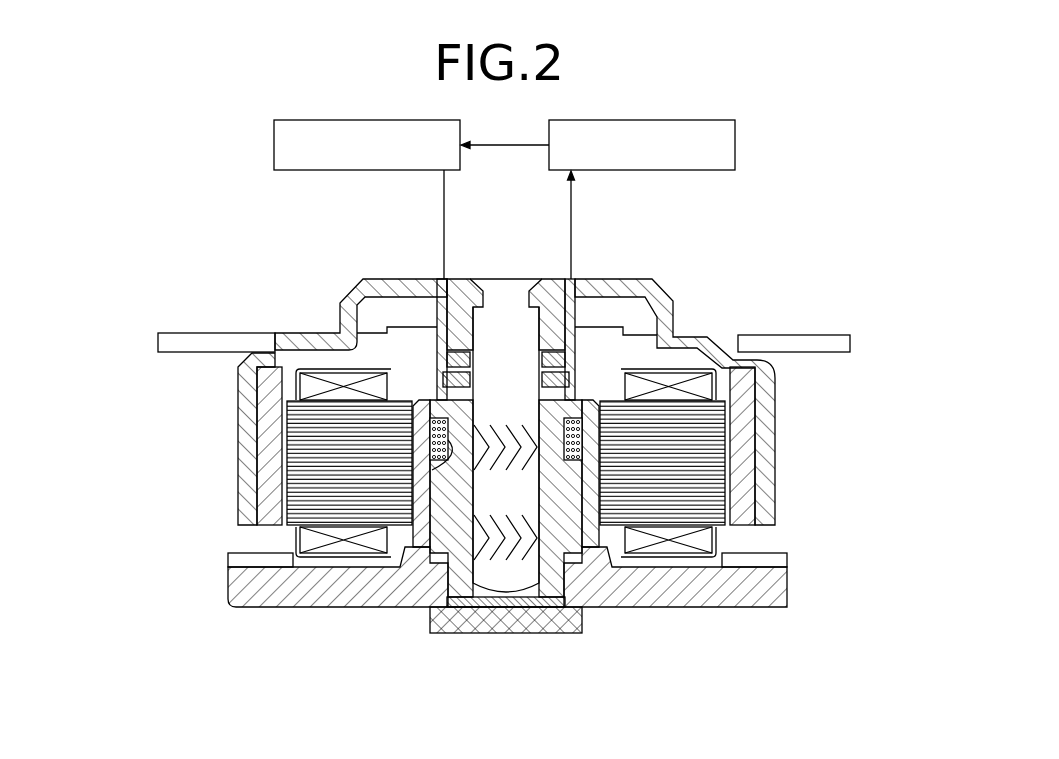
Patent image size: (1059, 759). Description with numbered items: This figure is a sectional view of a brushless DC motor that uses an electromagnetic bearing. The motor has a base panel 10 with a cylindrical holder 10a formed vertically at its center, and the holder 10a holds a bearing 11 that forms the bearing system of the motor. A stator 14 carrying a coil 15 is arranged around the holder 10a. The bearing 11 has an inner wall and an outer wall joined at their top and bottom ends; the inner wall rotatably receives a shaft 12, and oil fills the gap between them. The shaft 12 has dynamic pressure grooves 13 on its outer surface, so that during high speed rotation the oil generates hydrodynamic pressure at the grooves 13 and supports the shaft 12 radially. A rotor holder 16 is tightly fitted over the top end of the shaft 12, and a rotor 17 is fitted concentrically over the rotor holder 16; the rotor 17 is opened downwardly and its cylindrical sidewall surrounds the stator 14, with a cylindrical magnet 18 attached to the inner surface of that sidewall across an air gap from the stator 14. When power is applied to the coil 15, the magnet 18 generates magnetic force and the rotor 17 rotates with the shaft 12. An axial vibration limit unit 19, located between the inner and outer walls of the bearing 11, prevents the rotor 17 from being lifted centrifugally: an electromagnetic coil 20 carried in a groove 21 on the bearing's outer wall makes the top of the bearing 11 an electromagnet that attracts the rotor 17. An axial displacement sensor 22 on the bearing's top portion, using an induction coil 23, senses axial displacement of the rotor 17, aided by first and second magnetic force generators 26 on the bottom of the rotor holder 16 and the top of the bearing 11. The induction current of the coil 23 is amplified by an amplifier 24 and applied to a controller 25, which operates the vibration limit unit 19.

The base panel 10 is at (299, 613).
The cylindrical holder 10a is at (553, 560).
The bearing 11 is at (555, 560).
The shaft 12 is at (473, 582).
The dynamic pressure grooves 13 is at (492, 573).
The stator 14 is at (697, 477).
The coil 15 is at (735, 376).
The rotor holder 16 is at (445, 310).
The rotor 17 is at (318, 333).
The cylindrical magnet 18 is at (267, 493).
The axial vibration limit unit 19 is at (587, 480).
The electromagnetic coil 20 is at (430, 425).
The groove 21 is at (463, 499).
The axial displacement sensor 22 is at (703, 388).
The induction coil 23 is at (582, 384).
The amplifier 24 is at (700, 170).
The controller 25 is at (275, 142).
The first and second magnetic force generators 26 is at (445, 356).